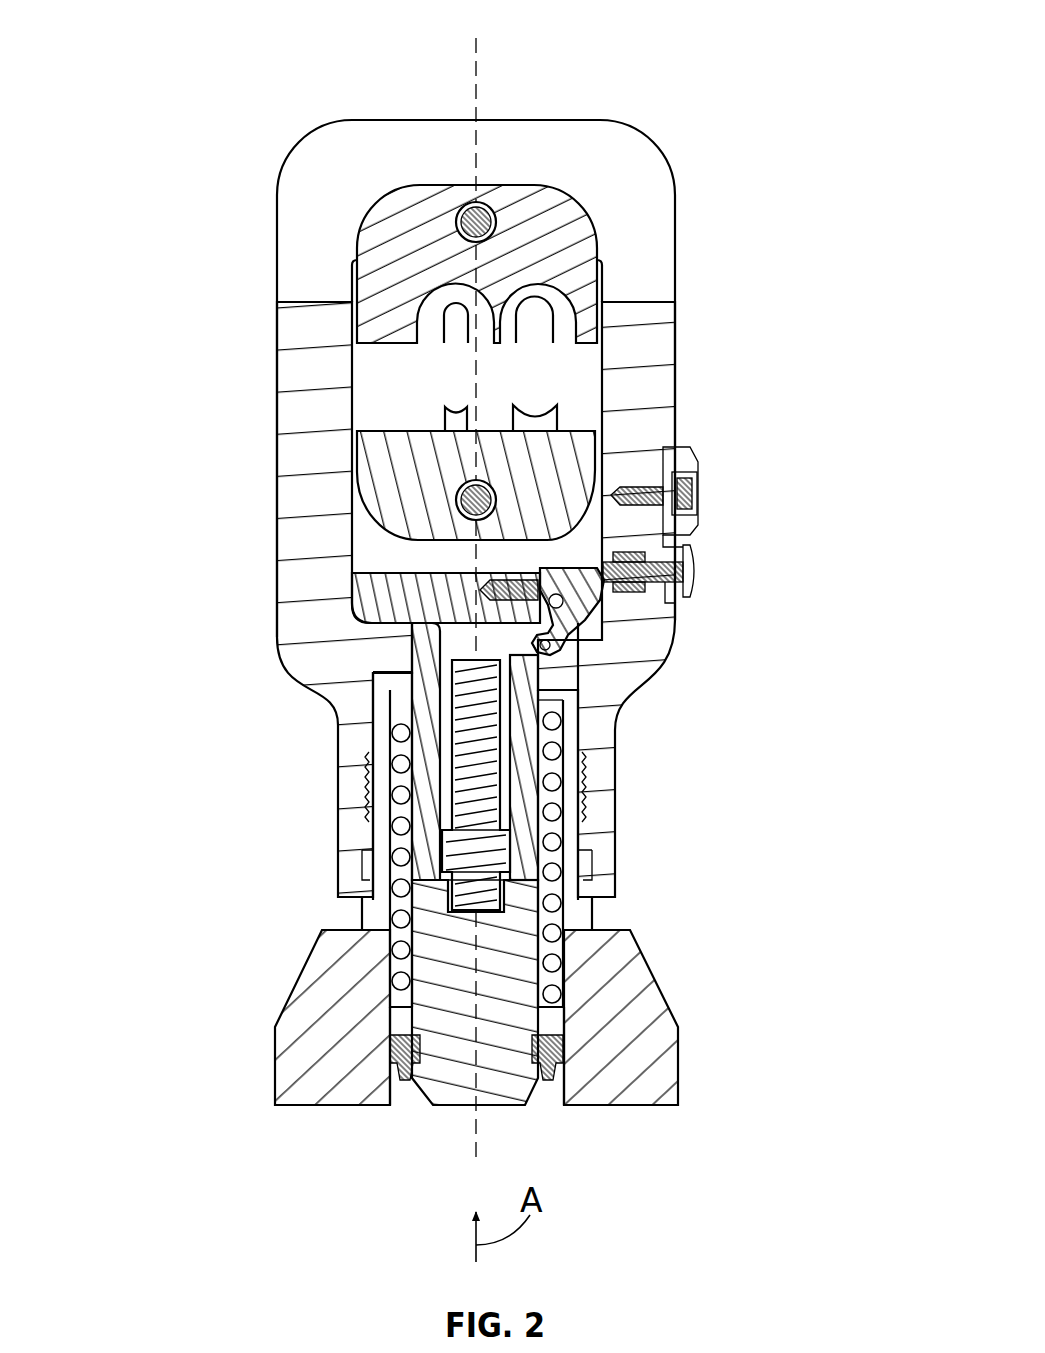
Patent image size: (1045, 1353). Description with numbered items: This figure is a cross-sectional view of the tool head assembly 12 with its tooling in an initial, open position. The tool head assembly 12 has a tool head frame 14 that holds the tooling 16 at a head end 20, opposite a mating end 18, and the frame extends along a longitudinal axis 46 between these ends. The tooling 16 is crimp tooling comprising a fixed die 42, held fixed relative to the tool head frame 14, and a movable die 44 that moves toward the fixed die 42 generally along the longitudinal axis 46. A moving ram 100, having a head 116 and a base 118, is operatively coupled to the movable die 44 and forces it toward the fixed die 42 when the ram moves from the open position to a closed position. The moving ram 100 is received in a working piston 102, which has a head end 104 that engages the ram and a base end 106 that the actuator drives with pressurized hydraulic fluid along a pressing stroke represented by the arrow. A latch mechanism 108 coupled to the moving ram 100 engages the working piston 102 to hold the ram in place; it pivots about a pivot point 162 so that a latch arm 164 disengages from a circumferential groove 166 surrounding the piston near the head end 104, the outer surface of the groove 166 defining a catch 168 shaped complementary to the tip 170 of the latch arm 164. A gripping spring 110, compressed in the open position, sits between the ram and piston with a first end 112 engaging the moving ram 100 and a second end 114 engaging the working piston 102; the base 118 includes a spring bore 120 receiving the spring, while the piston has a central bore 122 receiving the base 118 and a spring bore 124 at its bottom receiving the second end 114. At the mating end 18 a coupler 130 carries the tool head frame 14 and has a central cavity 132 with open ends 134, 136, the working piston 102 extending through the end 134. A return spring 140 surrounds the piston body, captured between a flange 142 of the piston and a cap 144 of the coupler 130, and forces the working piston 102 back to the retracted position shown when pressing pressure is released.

The tool head assembly 12 is at (177, 150).
The tool head frame 14 is at (305, 333).
The tooling 16 is at (607, 180).
The mating end 18 is at (650, 1105).
The head end 20 is at (553, 120).
The fixed die 42 is at (585, 245).
The movable die 44 is at (578, 438).
The longitudinal axis 46 is at (478, 77).
The moving ram 100 is at (367, 596).
The working piston 102 is at (430, 944).
The head end 104 is at (408, 650).
The base end 106 is at (432, 1098).
The latch mechanism 108 is at (565, 614).
The gripping spring 110 is at (545, 777).
The first end 112 is at (580, 640).
The second end 114 is at (545, 868).
The head 116 is at (400, 578).
The base 118 is at (440, 738).
The spring bore 120 is at (447, 700).
The central bore 122 is at (440, 850).
The spring bore 124 is at (445, 897).
The coupler 130 is at (662, 1030).
The central cavity 132 is at (548, 1097).
The open end 134 is at (585, 693).
The open end 136 is at (660, 1100).
The return spring 140 is at (553, 815).
The flange 142 is at (552, 1020).
The cap 144 is at (372, 673).
The pivot point 162 is at (698, 572).
The latch arm 164 is at (600, 623).
The circumferential groove 166 is at (406, 656).
The catch 168 is at (560, 640).
The tip 170 is at (560, 688).